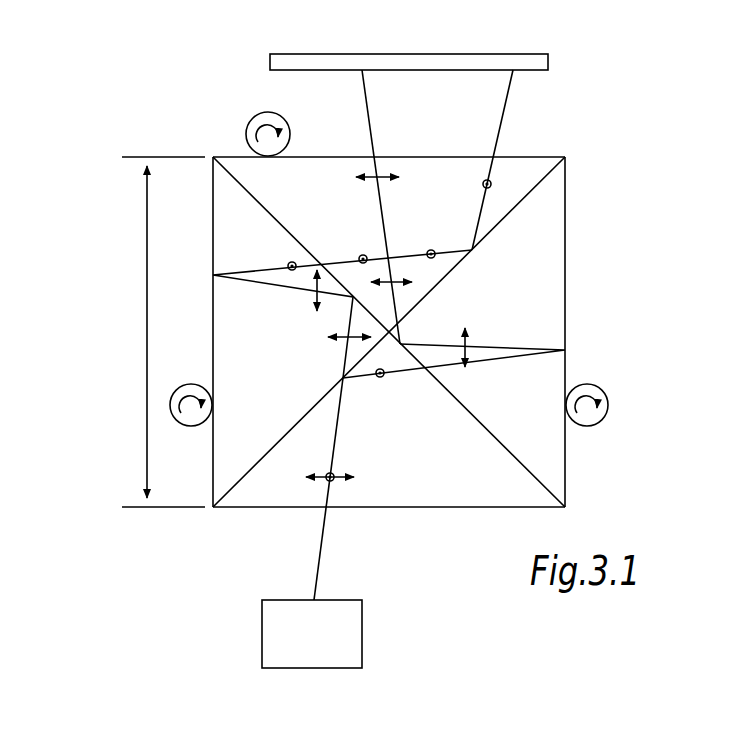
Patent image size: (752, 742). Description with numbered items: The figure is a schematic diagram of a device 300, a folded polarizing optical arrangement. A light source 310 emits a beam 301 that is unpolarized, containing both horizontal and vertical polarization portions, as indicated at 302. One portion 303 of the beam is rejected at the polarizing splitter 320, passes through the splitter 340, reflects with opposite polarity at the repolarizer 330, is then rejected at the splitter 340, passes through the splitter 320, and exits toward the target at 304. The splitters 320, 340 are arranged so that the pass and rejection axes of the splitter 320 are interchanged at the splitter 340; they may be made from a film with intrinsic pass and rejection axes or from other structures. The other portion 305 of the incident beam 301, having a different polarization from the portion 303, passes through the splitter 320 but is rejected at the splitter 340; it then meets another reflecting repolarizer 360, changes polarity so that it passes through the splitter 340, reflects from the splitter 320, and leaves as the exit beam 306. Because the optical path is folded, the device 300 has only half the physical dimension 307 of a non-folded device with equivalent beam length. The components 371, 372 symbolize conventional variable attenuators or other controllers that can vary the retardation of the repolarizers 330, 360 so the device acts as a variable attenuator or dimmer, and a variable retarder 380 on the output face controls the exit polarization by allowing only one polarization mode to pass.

The device 300 is at (598, 103).
The beam 301 is at (318, 552).
The polarization portions indication 302 is at (346, 476).
The one portion 303 is at (388, 378).
The exit point 304 is at (366, 93).
The other portion 305 is at (344, 365).
The exit beam 306 is at (505, 110).
The physical dimension 307 is at (146, 282).
The light source 310 is at (362, 632).
The polarizing splitter 320 is at (295, 425).
The repolarizer 330 is at (566, 205).
The splitter 340 is at (520, 470).
The reflecting repolarizer 360 is at (212, 208).
The variable attenuator or controller 371 is at (178, 388).
The variable attenuator or controller 372 is at (596, 386).
The variable retarder 380 is at (232, 156).